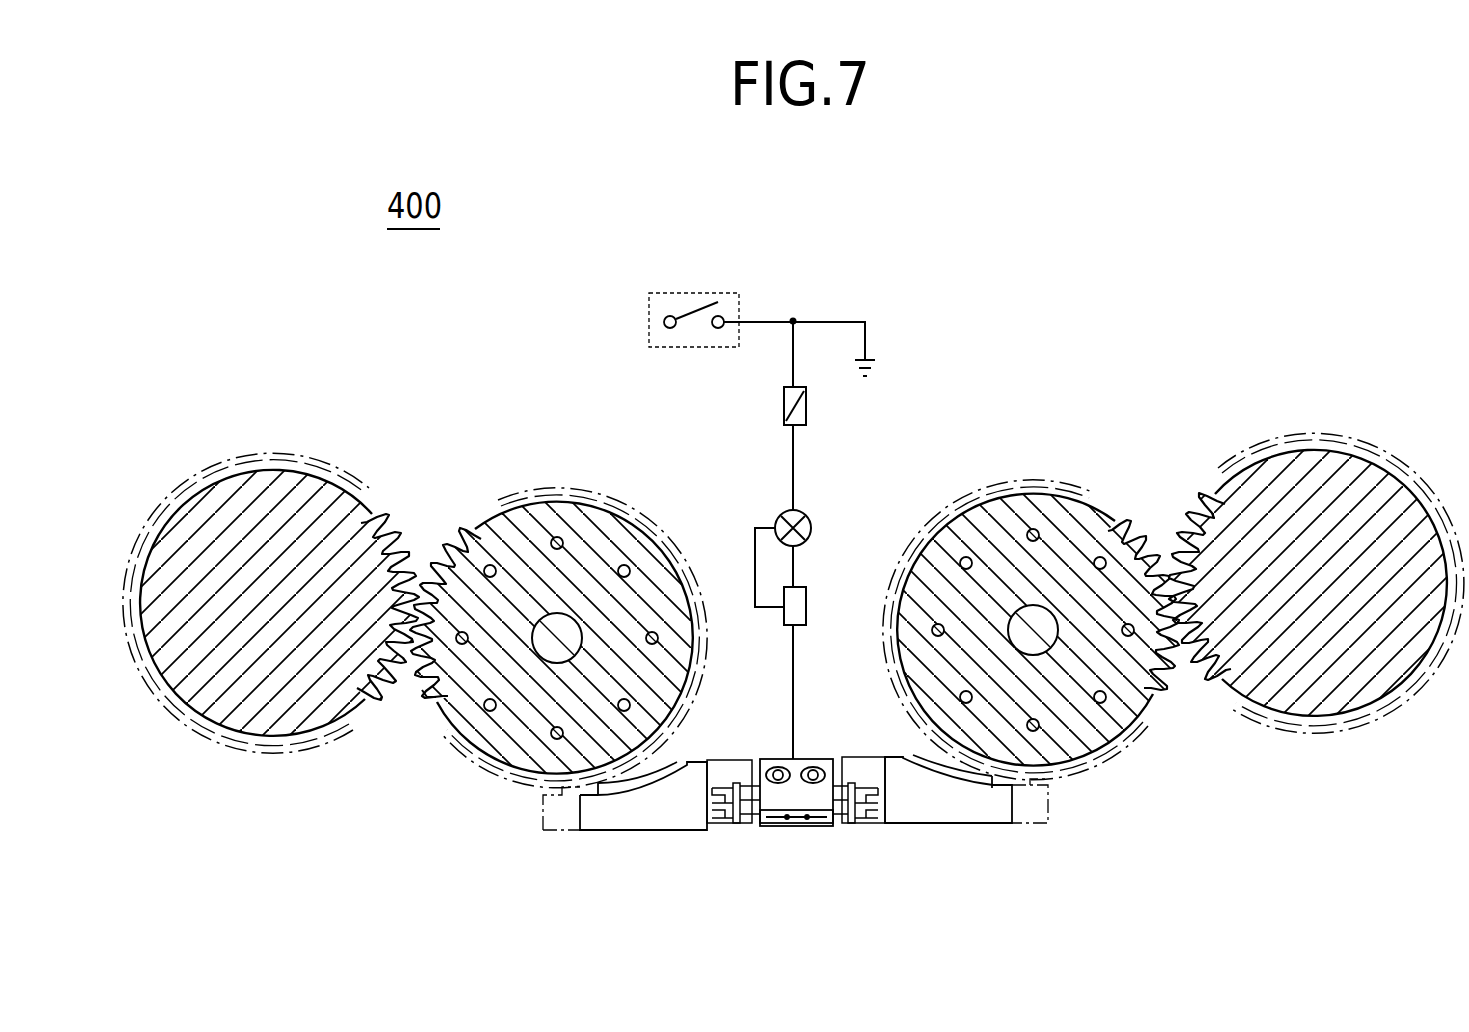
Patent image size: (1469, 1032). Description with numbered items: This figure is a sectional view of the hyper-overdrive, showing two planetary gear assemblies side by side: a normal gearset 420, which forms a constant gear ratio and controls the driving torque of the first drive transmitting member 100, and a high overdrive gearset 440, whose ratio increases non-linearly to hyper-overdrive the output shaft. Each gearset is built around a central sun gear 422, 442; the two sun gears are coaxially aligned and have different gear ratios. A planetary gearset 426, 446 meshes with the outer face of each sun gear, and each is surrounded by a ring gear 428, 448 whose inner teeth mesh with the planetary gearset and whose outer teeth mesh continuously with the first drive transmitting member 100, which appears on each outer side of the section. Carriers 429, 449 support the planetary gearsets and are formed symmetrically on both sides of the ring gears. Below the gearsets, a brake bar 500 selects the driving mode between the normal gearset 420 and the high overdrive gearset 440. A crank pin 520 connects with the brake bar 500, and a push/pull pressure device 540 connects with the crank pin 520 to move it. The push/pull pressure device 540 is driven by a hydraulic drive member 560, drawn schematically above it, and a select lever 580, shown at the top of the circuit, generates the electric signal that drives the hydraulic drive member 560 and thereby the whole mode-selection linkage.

The first drive transmitting member 100 is at (277, 487).
The normal gearset 420 is at (516, 629).
The sun gear 422 is at (553, 640).
The planetary gearset 426 is at (628, 568).
The ring gear 428 is at (513, 498).
The carrier 429 is at (463, 702).
The high overdrive gearset 440 is at (1070, 555).
The sun gear 442 is at (1040, 620).
The planetary gearset 446 is at (1040, 722).
The ring gear 448 is at (1015, 577).
The carrier 449 is at (1020, 510).
The brake bar 500 is at (930, 805).
The crank pin 520 is at (752, 828).
The push/pull pressure device 540 is at (793, 800).
The hydraulic drive member 560 is at (836, 528).
The select lever 580 is at (690, 292).